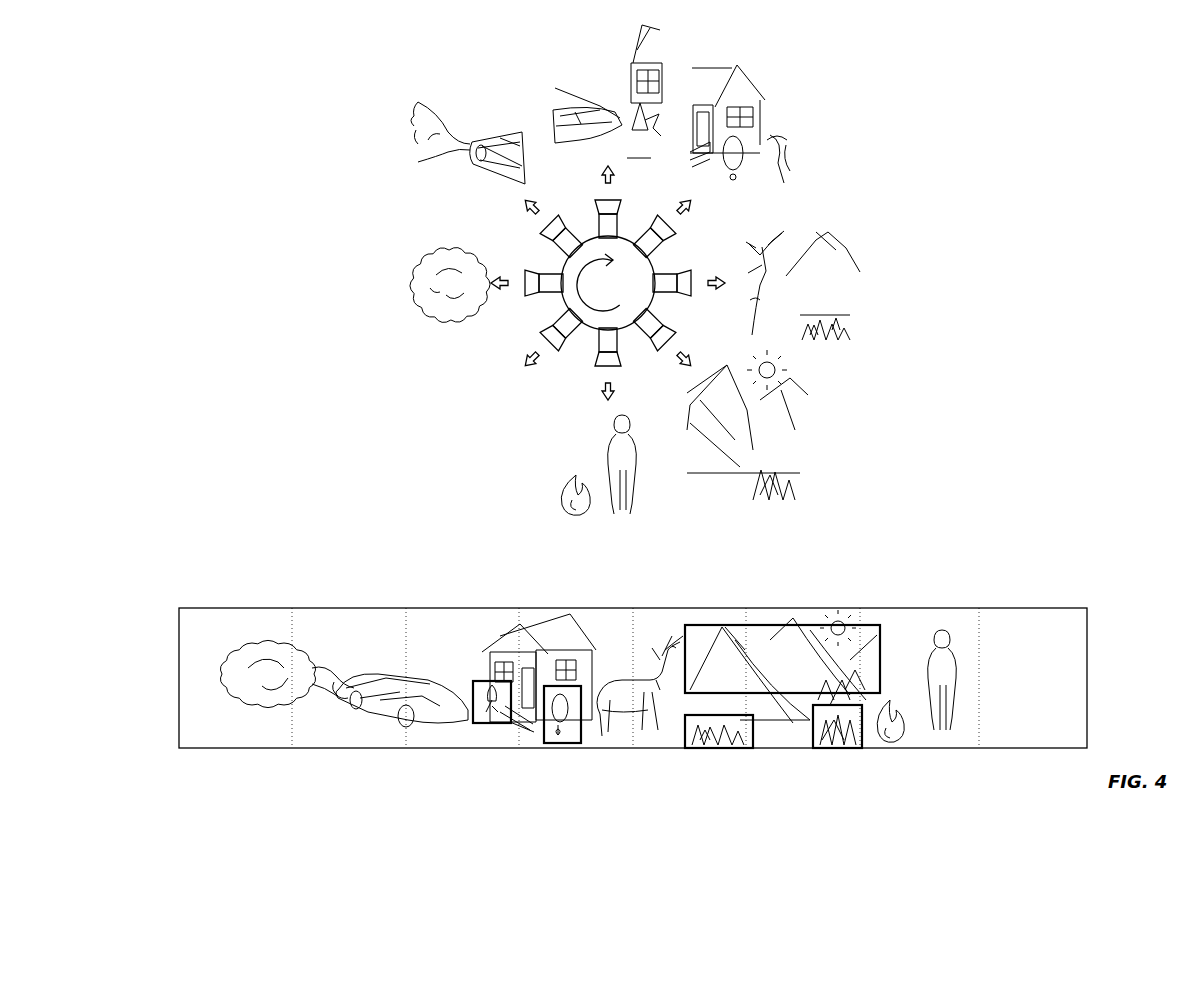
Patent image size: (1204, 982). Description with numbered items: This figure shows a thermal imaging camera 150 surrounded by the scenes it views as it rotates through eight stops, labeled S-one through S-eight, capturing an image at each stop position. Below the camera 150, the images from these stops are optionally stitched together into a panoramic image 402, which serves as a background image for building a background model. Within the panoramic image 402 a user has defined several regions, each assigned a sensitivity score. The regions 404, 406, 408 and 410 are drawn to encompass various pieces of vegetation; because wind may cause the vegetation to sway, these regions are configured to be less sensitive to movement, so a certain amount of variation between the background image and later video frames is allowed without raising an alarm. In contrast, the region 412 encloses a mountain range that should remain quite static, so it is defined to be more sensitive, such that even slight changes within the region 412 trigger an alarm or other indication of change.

The camera 150 is at (630, 293).
The panoramic image 402 is at (1012, 563).
The user defined region 404 is at (478, 681).
The user defined region 406 is at (565, 686).
The user defined region 408 is at (738, 748).
The user defined region 410 is at (848, 748).
The user defined region 412 is at (780, 625).